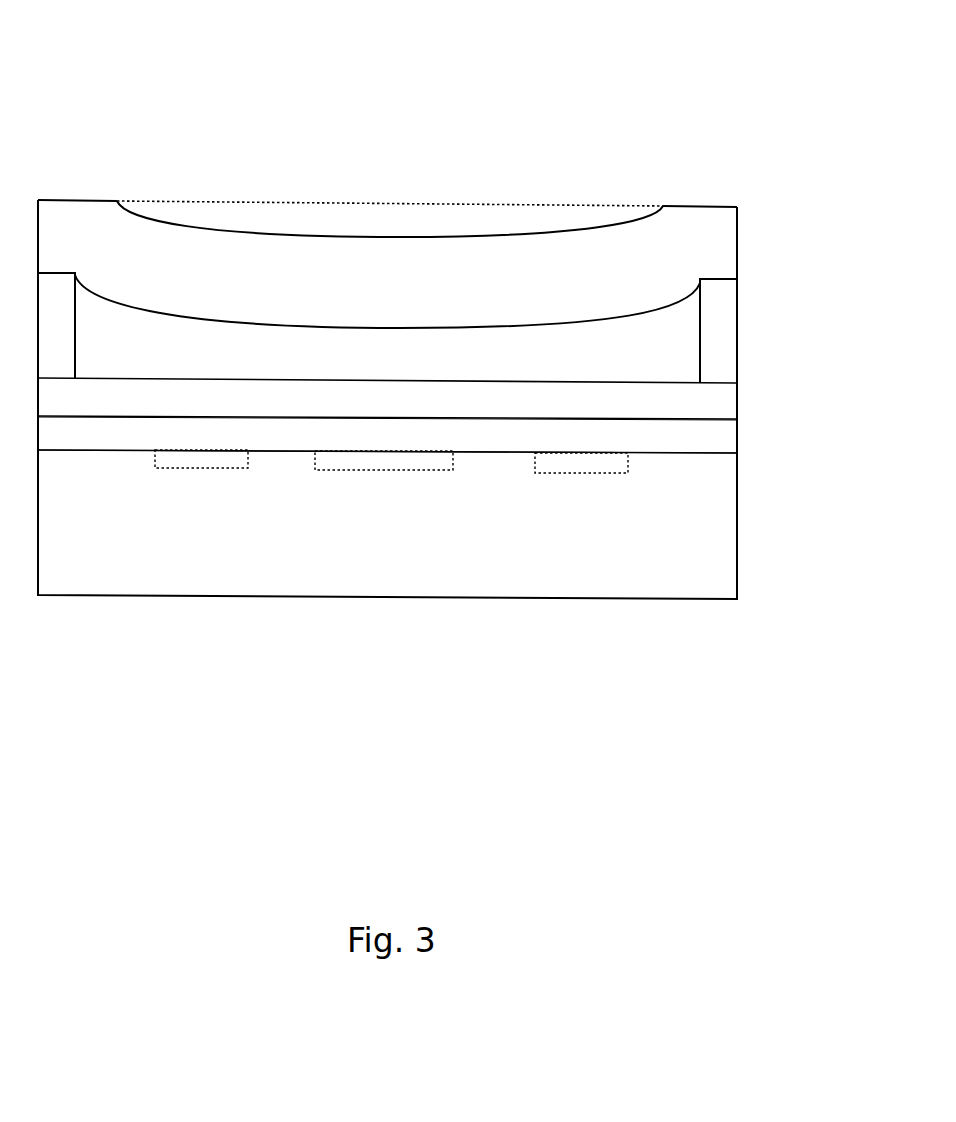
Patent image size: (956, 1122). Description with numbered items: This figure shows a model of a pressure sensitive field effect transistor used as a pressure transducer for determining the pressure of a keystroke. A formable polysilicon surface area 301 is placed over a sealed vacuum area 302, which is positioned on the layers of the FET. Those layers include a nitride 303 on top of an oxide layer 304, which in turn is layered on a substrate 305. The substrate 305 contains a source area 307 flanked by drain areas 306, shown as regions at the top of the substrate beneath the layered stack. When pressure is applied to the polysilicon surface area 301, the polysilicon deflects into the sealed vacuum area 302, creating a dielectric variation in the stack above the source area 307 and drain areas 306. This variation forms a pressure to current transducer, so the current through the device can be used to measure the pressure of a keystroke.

The formable polysilicon surface area 301 is at (275, 236).
The sealed vacuum area 302 is at (395, 354).
The nitride 303 is at (387, 398).
The transparent layer 304 is at (387, 435).
The substrate 305 is at (387, 399).
The drain areas 306 is at (210, 470).
The source area 307 is at (338, 470).